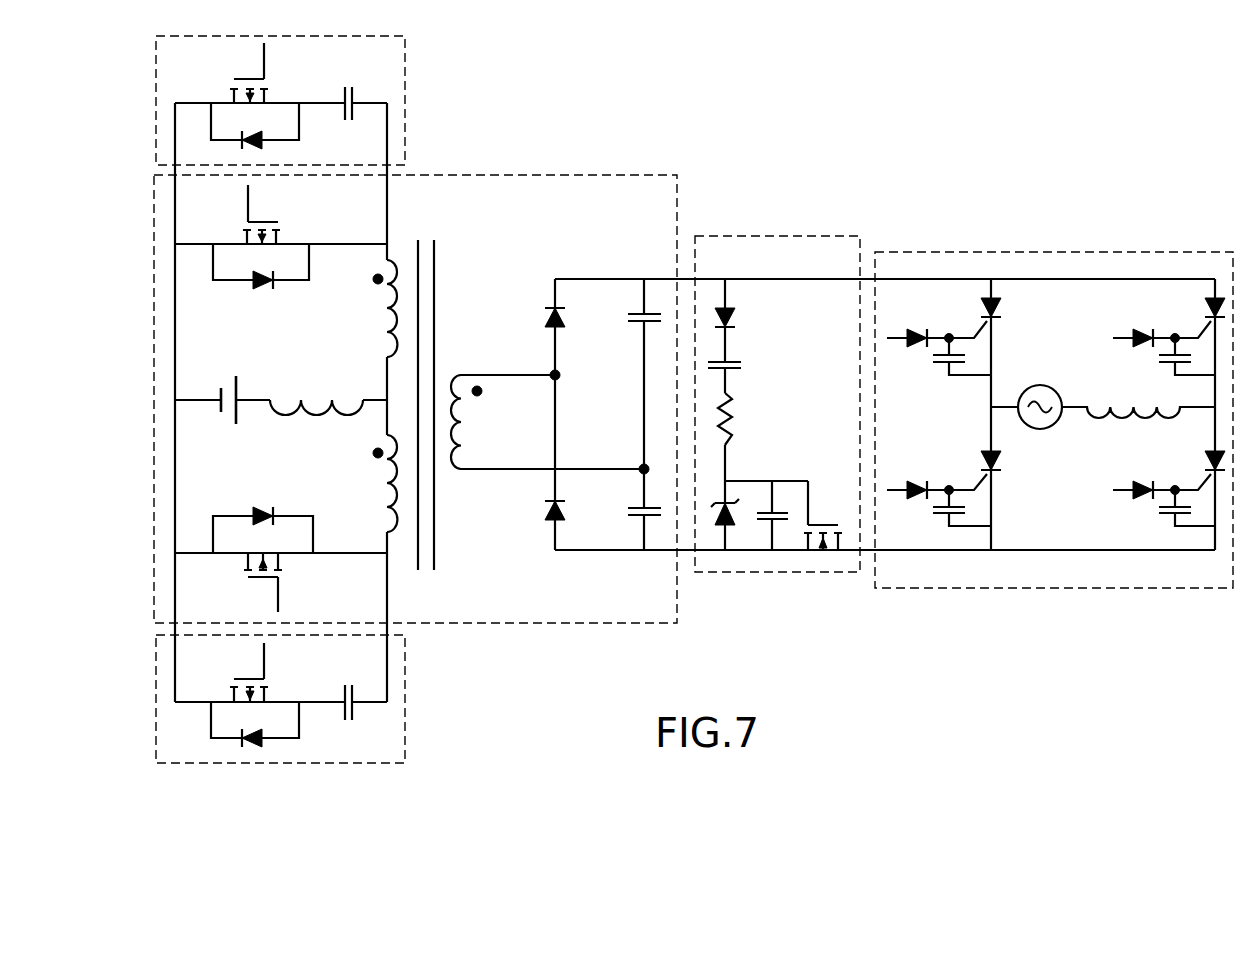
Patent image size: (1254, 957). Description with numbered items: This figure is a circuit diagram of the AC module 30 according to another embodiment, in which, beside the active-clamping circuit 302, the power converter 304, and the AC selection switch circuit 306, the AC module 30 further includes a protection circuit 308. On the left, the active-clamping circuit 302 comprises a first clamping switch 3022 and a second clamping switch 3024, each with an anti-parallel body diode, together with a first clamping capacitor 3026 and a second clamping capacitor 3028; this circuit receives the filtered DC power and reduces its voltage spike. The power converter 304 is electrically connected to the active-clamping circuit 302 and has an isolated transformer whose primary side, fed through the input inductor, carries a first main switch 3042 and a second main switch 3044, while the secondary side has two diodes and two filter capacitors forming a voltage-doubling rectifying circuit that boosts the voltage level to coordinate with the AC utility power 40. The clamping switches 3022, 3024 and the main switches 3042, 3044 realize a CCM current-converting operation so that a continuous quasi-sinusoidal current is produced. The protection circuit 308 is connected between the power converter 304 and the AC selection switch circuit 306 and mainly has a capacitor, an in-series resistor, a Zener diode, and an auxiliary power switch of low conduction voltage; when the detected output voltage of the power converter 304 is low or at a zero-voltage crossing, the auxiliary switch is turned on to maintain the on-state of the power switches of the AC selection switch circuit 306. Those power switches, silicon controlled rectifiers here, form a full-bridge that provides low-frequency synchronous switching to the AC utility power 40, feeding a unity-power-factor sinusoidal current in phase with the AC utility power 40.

The AC module 30 is at (907, 110).
The active-clamping circuit 302 is at (405, 70).
The first clamping switch 3022 is at (228, 82).
The second clamping switch 3024 is at (230, 680).
The first clamping capacitor 3026 is at (357, 91).
The second clamping capacitor 3028 is at (350, 722).
The power converter 304 is at (580, 175).
The first main switch 3042 is at (280, 223).
The second main switch 3044 is at (282, 573).
The AC selection switch circuit 306 is at (1054, 378).
The protection circuit 308 is at (792, 235).
The AC utility power 40 is at (1043, 429).